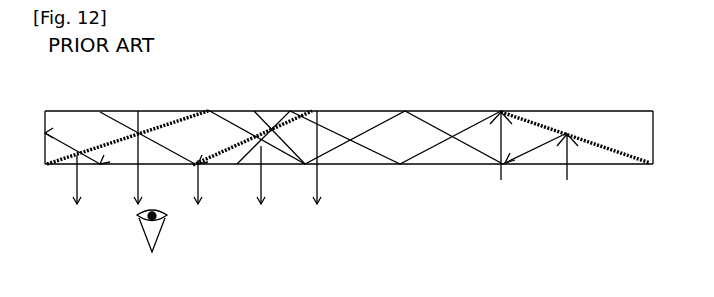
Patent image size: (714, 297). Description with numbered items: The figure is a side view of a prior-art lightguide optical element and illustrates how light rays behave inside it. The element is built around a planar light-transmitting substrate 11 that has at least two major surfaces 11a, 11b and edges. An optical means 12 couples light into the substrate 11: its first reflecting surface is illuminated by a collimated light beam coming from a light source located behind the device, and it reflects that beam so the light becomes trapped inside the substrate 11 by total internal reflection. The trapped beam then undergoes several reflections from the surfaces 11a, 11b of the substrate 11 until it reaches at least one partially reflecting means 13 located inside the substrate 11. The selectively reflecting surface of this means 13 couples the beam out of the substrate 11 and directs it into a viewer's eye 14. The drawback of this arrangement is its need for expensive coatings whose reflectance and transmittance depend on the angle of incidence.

The planar light-transmitting substrate 11 is at (350, 118).
The major surface 11a is at (340, 165).
The major surface 11b is at (572, 112).
The optical means 12 is at (610, 148).
The partially reflecting means 13 is at (150, 124).
The viewer's eye 14 is at (155, 238).